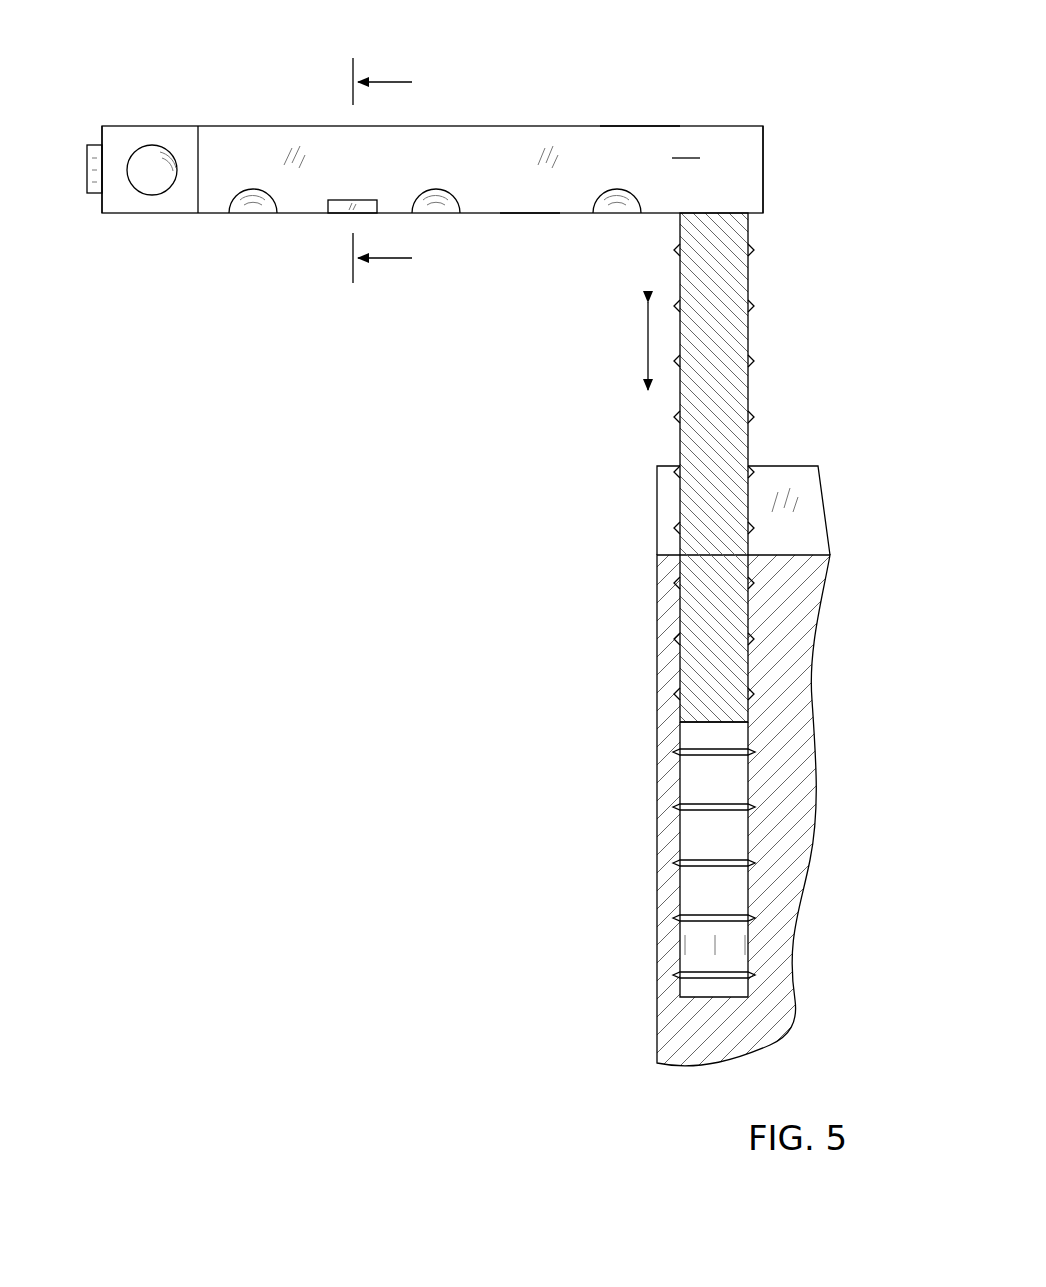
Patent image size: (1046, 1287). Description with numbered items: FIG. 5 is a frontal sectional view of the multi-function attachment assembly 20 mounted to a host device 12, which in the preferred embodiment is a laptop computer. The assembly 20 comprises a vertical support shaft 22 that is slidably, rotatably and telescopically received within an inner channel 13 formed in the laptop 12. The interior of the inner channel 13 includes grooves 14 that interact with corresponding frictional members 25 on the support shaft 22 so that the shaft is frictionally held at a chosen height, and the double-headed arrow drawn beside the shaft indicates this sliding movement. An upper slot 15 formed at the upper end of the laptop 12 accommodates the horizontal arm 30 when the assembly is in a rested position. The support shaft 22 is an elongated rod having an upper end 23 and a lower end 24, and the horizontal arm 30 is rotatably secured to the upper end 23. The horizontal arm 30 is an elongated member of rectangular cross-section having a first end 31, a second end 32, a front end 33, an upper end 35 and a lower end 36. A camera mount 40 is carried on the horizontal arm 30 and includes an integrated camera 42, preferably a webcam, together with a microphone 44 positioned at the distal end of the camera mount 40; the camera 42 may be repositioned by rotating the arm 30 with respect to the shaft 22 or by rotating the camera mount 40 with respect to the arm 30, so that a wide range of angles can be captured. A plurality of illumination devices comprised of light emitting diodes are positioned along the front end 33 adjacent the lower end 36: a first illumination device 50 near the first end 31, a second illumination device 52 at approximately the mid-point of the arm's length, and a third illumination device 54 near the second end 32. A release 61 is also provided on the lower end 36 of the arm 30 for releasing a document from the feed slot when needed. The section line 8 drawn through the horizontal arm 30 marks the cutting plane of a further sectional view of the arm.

The section line 8- 8 is at (395, 170).
The host device 12 is at (646, 1028).
The inner channel 13 is at (712, 891).
The grooves 14 is at (703, 756).
The upper slot 15 is at (778, 483).
The multi-function attachment assembly 20 is at (490, 118).
The support shaft 22 is at (728, 333).
The upper end 23 is at (748, 226).
The lower end 24 is at (710, 722).
The frictional members 25 is at (750, 306).
The horizontal arm 30 is at (262, 126).
The first end 31 is at (764, 170).
The second end 32 is at (102, 137).
The front end 33 is at (672, 158).
The upper end 35 is at (615, 126).
The lower end 36 is at (530, 213).
The camera mount 40 is at (145, 207).
The camera 42 is at (130, 148).
The microphone 44 is at (87, 180).
The first illumination device 50 is at (250, 215).
The second illumination device 52 is at (448, 213).
The third illumination device 54 is at (615, 213).
The release 61 is at (340, 206).